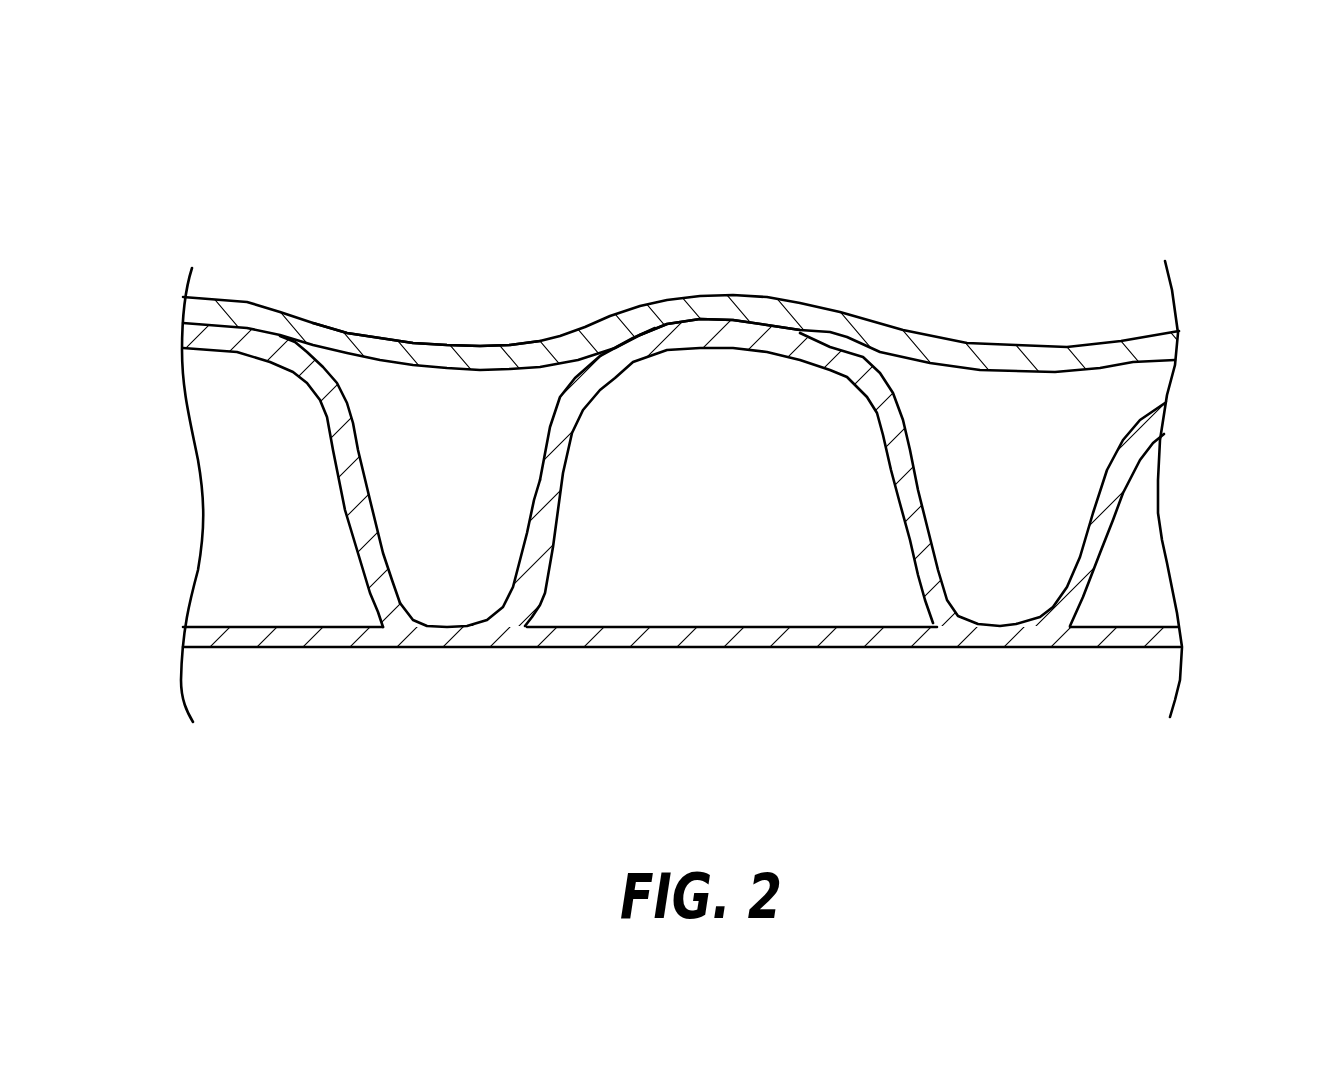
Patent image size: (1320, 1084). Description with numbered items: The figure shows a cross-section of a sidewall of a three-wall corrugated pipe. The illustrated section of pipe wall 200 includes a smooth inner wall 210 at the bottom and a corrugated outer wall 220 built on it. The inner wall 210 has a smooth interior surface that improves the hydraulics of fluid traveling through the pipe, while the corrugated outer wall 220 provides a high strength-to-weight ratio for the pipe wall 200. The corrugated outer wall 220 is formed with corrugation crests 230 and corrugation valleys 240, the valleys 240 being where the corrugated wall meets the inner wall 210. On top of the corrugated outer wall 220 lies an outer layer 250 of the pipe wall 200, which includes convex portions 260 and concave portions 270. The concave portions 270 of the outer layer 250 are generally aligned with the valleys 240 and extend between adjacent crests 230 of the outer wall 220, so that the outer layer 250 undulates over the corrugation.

The pipe wall 200 is at (1125, 140).
The inner wall 210 is at (835, 650).
The corrugated outer wall 220 is at (1108, 549).
The corrugation crest 230 is at (690, 352).
The corrugation valley 240 is at (452, 627).
The outer layer 250 is at (1059, 346).
The convex portion 260 is at (704, 294).
The concave portion 270 is at (420, 342).